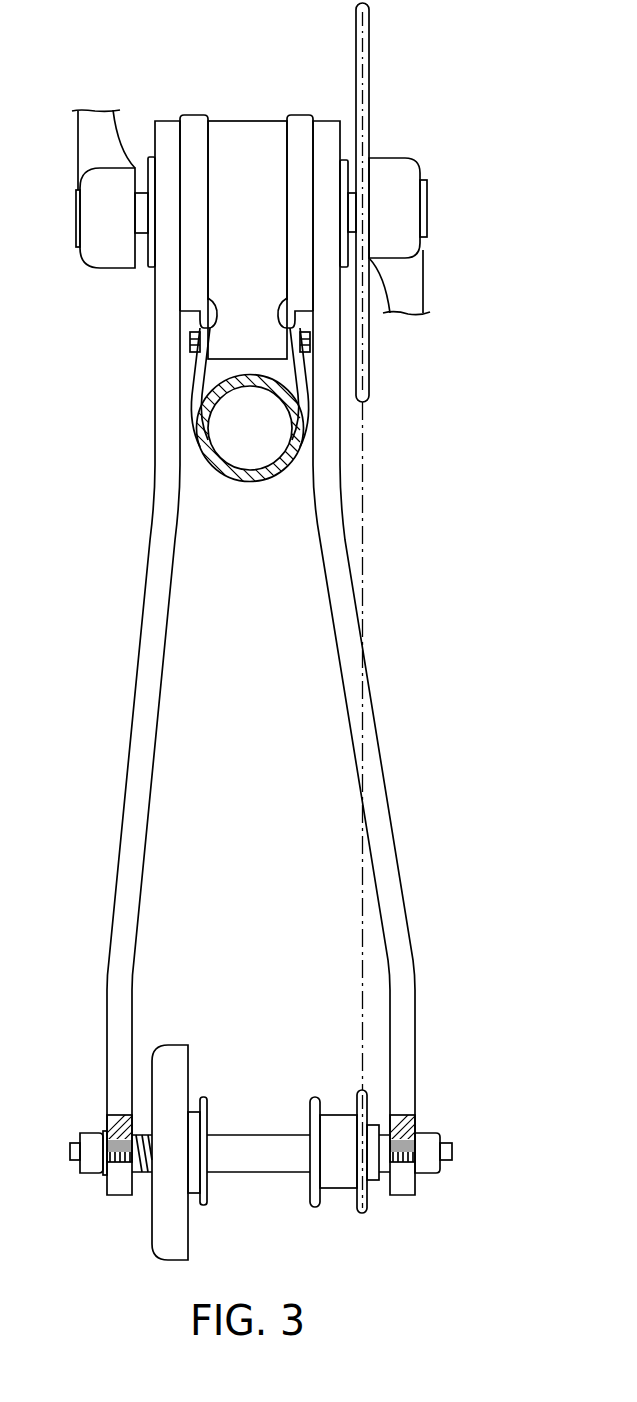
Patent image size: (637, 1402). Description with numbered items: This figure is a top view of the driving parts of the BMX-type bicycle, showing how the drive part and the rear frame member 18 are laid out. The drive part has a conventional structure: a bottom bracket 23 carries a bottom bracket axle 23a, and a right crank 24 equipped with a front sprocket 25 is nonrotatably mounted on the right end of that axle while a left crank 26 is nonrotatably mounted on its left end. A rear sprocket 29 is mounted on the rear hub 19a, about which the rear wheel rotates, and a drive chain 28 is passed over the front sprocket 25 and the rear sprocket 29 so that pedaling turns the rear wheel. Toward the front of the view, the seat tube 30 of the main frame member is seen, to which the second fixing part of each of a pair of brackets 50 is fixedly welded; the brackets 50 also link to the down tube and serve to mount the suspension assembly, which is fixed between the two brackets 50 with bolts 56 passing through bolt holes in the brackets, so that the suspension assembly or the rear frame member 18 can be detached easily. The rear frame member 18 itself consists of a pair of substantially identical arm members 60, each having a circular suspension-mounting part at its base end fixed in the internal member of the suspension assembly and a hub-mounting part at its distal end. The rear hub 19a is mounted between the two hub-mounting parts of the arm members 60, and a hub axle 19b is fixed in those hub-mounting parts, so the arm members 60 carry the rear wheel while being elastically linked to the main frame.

The rear frame member 18 is at (395, 745).
The rear hub 19a is at (263, 1132).
The hub axle 19b is at (453, 1152).
The bottom bracket 23 is at (153, 268).
The bottom bracket axle 23a is at (143, 193).
The right crank 24 is at (410, 300).
The front sprocket 25 is at (369, 58).
The left crank 26 is at (97, 253).
The drive chain 28 is at (362, 502).
The rear sprocket 29 is at (368, 1103).
The seat tube 30 is at (255, 477).
The bracket 50 is at (190, 388).
The bolt 56 is at (190, 342).
The arm member 60 is at (142, 808).